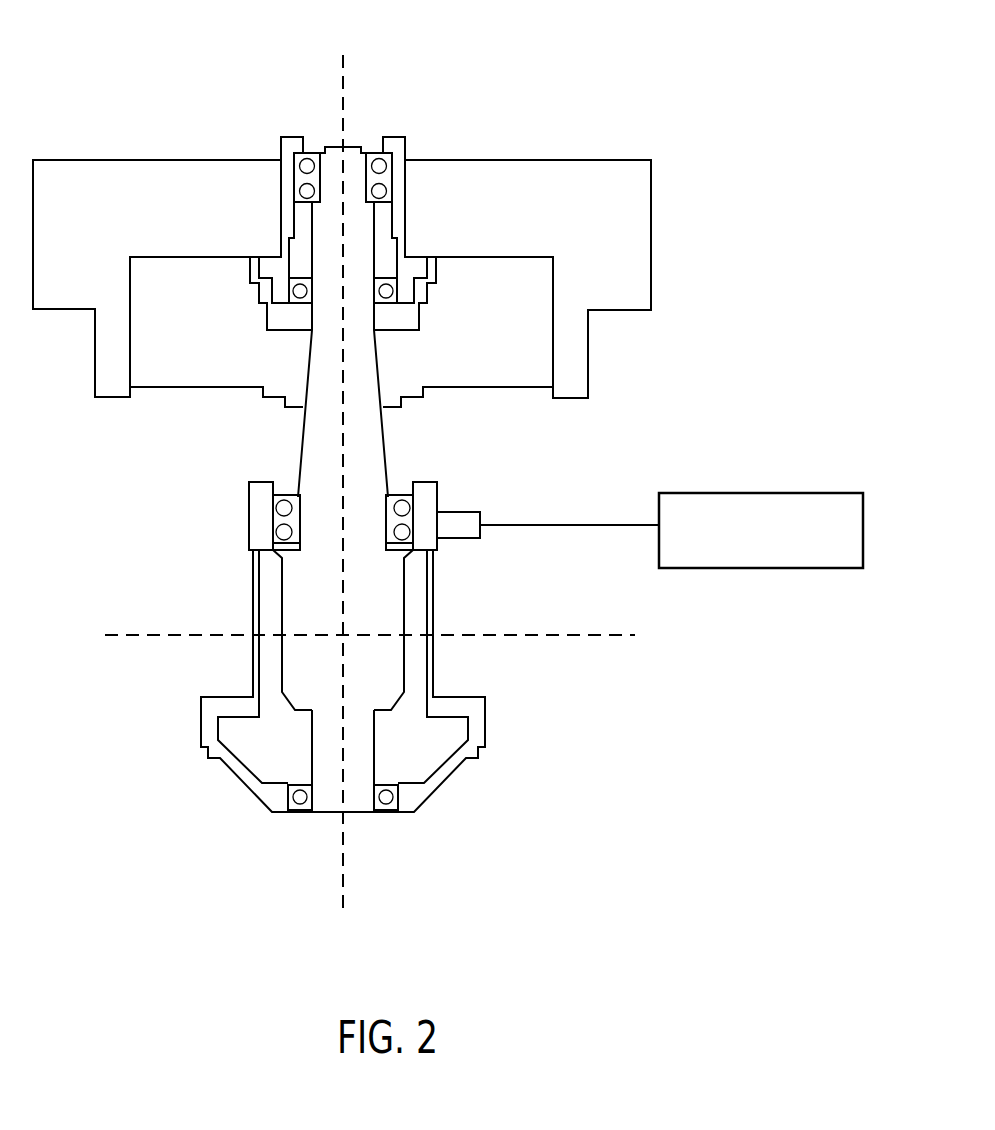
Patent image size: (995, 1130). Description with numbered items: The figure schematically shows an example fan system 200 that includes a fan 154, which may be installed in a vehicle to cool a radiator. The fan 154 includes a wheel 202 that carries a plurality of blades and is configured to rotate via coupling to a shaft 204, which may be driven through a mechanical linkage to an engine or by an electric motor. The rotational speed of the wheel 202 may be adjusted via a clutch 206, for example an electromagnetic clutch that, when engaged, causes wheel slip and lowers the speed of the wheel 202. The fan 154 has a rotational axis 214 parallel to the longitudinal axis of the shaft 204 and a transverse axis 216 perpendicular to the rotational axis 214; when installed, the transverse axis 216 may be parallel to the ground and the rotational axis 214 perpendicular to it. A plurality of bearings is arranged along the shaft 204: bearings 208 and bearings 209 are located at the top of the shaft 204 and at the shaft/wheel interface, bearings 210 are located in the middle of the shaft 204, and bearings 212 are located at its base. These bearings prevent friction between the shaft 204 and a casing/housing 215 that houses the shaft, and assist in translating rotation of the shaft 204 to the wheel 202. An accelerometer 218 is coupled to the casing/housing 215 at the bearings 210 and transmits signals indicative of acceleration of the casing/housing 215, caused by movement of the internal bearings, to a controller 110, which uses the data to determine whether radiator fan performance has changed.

The fan system 200 is at (719, 50).
The fan 154 is at (525, 118).
The wheel 202 is at (615, 165).
The shaft 204 is at (377, 478).
The clutch 206 is at (457, 383).
The bearings 208 is at (383, 160).
The bearings 209 is at (387, 293).
The bearings 210 is at (402, 495).
The bearings 212 is at (388, 803).
The rotational axis 214 is at (344, 90).
The casing/housing 215 is at (430, 590).
The transverse axis 216 is at (615, 640).
The accelerometer 218 is at (473, 518).
The controller 110 is at (792, 493).